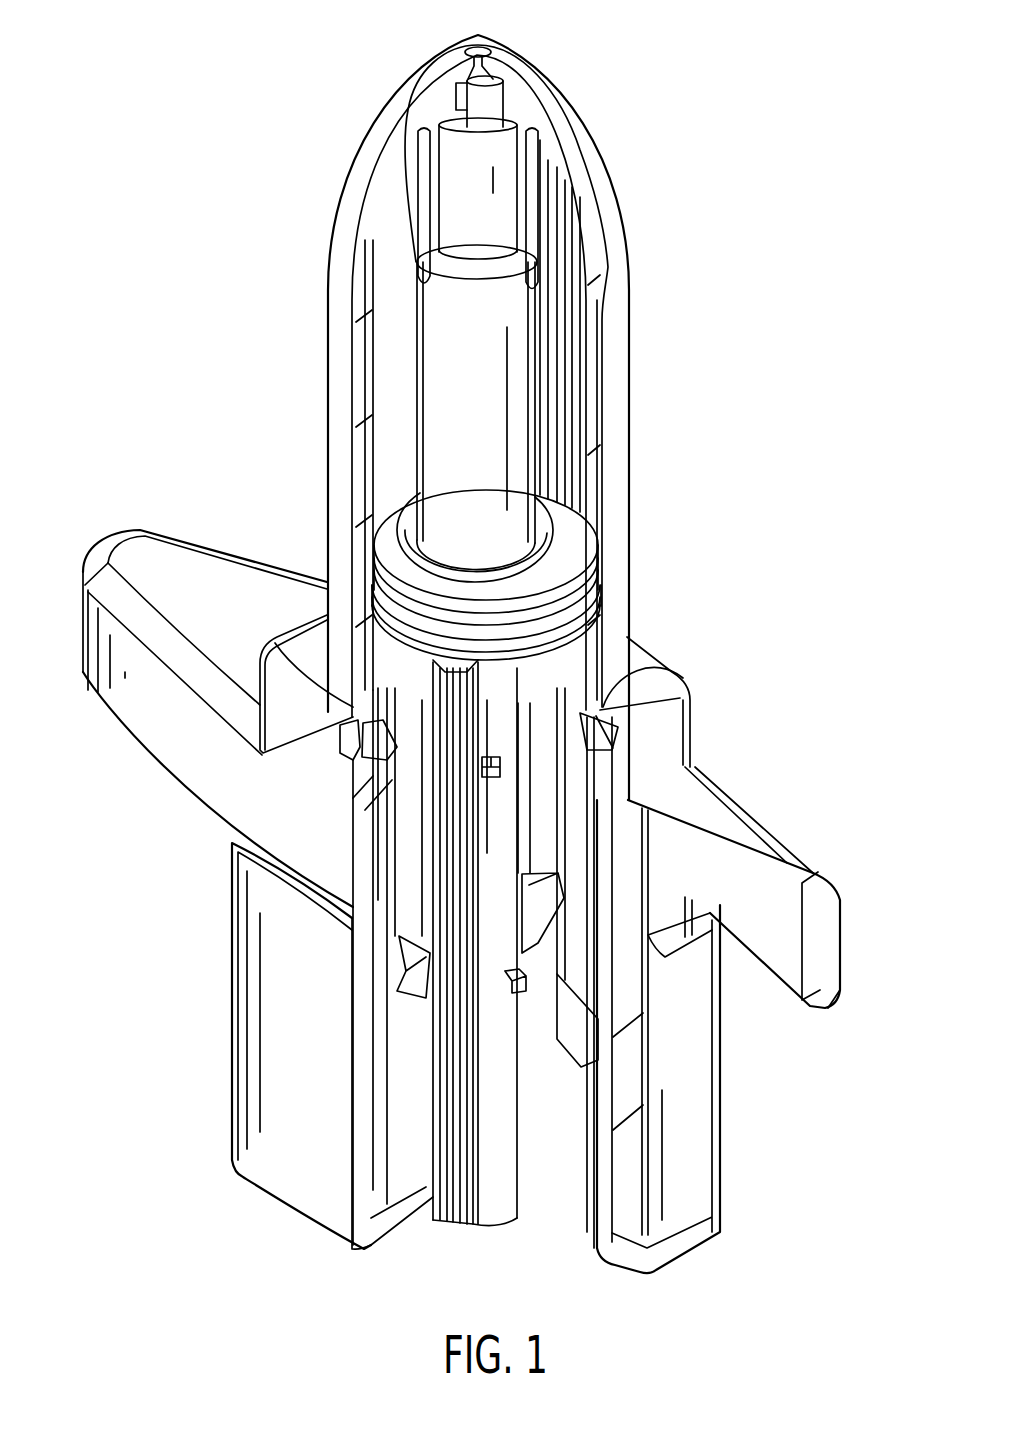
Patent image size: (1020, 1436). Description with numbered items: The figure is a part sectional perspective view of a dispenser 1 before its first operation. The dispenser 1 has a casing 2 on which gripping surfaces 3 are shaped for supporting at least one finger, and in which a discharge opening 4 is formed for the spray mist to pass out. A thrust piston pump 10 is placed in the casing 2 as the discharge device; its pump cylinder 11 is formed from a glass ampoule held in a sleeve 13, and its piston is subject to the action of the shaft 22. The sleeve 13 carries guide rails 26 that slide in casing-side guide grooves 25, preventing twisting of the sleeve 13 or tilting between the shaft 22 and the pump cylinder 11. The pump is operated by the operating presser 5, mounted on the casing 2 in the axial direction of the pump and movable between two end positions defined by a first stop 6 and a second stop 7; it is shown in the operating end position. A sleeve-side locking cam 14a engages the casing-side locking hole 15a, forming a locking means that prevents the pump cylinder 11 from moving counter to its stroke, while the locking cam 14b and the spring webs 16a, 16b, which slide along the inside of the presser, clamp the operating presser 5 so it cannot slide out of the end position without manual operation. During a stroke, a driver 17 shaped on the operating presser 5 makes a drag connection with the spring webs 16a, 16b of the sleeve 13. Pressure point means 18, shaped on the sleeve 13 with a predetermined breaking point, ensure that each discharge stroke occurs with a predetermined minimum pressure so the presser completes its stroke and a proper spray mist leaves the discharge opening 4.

The dispenser 1 is at (675, 419).
The casing 2 is at (617, 336).
The gripping surfaces 3 is at (238, 607).
The discharge opening 4 is at (499, 55).
The operating presser 5 is at (320, 1143).
The first stop 6 is at (597, 710).
The second stop 7 is at (630, 1238).
The thrust piston pump 10 is at (419, 376).
The pump cylinder 11 is at (402, 490).
The sleeve 13 is at (567, 667).
The locking cam 14a is at (360, 783).
The locking cam 14b is at (400, 972).
The locking hole 15a is at (340, 747).
The spring web 16a is at (545, 922).
The spring web 16b is at (578, 1012).
The driver 17 is at (607, 753).
The pressure point means 18 is at (490, 752).
The shaft 22 is at (440, 340).
The guide grooves 25 is at (563, 235).
The guide rails 26 is at (484, 1195).